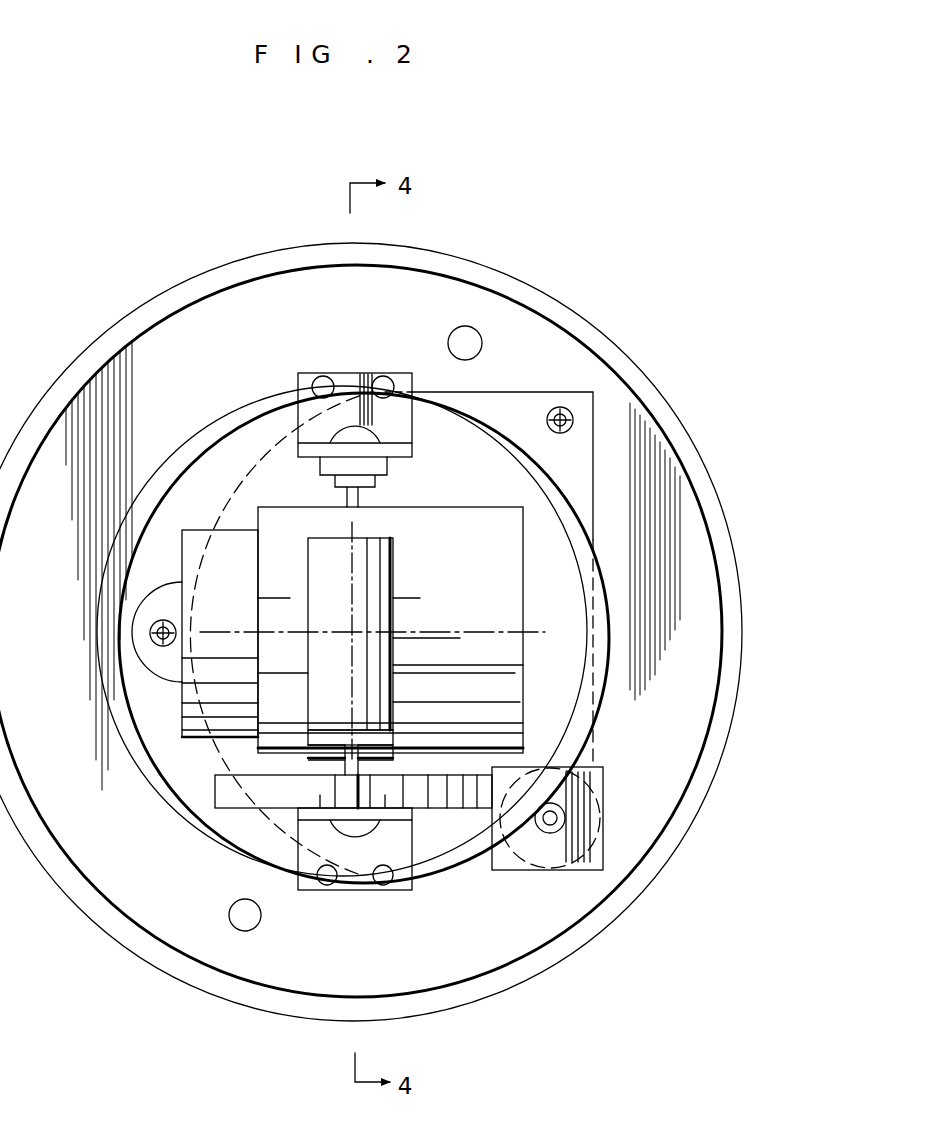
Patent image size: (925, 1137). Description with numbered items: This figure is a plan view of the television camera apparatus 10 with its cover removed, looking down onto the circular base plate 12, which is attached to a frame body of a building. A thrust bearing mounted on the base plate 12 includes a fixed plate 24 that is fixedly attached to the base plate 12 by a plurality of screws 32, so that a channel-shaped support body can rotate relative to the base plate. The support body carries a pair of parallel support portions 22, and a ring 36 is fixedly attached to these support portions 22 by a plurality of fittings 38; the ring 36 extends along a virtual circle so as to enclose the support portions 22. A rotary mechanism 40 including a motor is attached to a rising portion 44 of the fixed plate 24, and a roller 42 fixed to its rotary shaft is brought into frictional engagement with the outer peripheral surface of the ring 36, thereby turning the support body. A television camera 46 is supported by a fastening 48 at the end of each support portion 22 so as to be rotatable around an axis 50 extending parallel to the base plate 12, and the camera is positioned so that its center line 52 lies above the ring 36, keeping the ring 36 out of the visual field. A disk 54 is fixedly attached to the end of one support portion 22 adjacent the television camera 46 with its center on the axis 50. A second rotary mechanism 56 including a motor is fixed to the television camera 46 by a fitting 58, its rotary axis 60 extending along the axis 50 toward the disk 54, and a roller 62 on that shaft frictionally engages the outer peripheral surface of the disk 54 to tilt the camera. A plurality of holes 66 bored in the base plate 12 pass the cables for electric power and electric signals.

The television camera apparatus 10 is at (568, 298).
The circular base plate 12 is at (690, 532).
The support portions 22 is at (305, 458).
The fixed plate 24 is at (585, 487).
The screws 32 is at (557, 407).
The ring 36 is at (153, 796).
The fittings 38 is at (307, 387).
The rotary mechanism 40 is at (600, 782).
The roller 42 is at (566, 818).
The rising portion 44 is at (508, 870).
The television camera 46 is at (485, 514).
The fastening 48 is at (360, 430).
The axis 50 is at (372, 568).
The center line 52 is at (464, 630).
The disk 54 is at (220, 797).
The rotary mechanism 56 is at (395, 665).
The fitting 58 is at (397, 723).
The rotary axis 60 is at (362, 753).
The roller 62 is at (376, 791).
The holes 66 is at (458, 328).